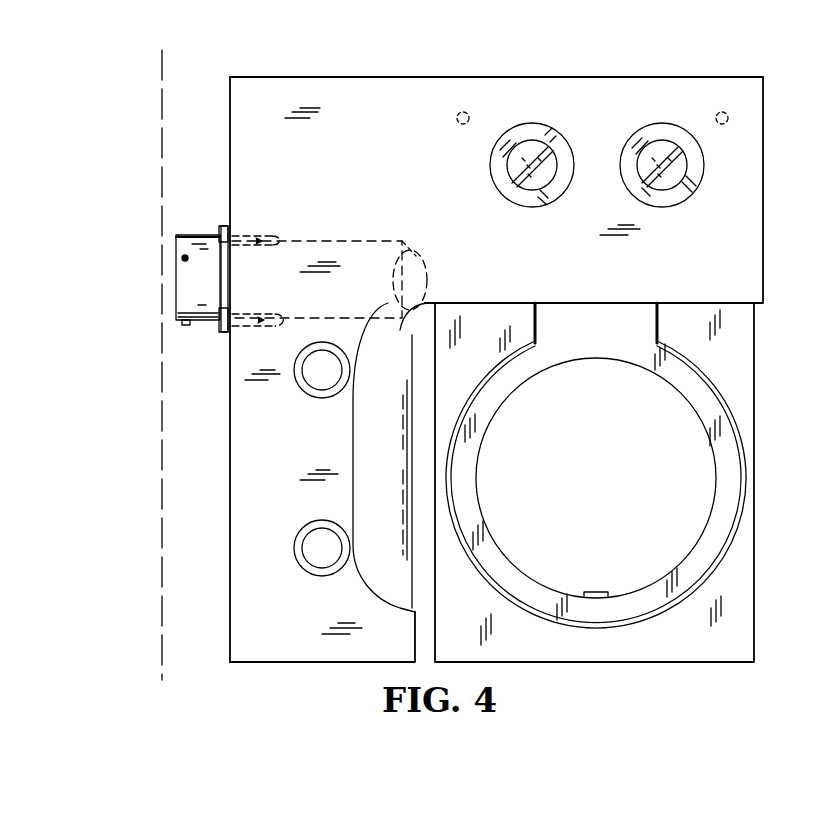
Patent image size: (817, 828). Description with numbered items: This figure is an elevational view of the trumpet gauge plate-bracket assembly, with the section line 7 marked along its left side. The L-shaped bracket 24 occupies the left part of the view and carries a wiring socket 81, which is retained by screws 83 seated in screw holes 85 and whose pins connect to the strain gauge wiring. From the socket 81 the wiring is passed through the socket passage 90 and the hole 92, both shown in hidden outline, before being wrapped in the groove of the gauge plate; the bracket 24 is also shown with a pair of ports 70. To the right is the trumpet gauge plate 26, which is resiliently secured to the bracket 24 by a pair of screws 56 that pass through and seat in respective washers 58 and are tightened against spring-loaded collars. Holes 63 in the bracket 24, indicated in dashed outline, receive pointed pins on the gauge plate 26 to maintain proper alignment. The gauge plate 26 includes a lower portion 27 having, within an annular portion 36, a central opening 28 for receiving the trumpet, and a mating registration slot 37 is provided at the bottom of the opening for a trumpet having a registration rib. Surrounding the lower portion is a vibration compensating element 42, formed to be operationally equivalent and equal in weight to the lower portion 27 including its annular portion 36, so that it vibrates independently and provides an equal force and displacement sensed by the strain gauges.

The section line 7- 7 is at (197, 62).
The bracket 24 is at (228, 528).
The trumpet gauge plate 26 is at (762, 575).
The lower portion 27 is at (612, 341).
The central opening 28 is at (696, 468).
The annular portion 36 is at (648, 604).
The registration slot 37 is at (594, 592).
The vibration compensating element 42 is at (507, 341).
The screws 56 is at (511, 186).
The washers 58 is at (541, 206).
The holes 63 is at (457, 122).
The hose port 70 is at (298, 362).
The wiring socket 81 is at (205, 235).
The screws 83 is at (226, 226).
The screw holes 85 is at (258, 236).
The socket passage 90 is at (346, 242).
The hole 92 is at (424, 263).